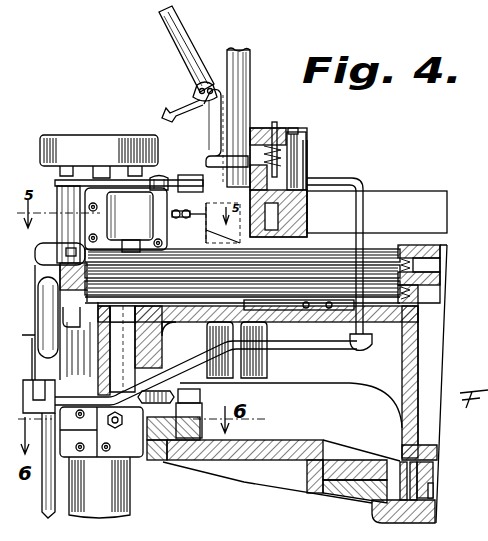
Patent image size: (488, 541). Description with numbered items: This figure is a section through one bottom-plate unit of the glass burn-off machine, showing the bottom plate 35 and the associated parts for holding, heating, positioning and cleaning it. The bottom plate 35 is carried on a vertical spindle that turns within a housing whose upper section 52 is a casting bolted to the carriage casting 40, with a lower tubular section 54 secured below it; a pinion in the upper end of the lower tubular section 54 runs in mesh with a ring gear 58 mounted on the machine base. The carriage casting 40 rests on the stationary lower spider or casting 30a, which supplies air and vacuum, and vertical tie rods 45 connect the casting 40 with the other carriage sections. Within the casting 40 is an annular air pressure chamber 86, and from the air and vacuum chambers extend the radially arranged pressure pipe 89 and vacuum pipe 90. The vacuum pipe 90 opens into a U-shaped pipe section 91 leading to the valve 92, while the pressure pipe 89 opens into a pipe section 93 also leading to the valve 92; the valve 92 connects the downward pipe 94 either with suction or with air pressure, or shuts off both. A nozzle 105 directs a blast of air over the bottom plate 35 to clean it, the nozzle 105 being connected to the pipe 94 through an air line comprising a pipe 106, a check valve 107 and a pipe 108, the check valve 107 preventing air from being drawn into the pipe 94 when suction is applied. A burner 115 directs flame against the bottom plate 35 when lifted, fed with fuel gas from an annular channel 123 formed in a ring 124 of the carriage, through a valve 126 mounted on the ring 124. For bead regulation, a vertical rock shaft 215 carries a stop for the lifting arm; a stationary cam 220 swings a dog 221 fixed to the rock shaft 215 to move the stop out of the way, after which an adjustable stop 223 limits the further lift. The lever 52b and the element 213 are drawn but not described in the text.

The burner 115 is at (181, 34).
The nozzle 105 is at (170, 112).
The pipe 106 is at (194, 112).
The vertical tie rods 45 is at (246, 62).
The bottom plate 35 is at (55, 140).
The adjustable stop 223 is at (160, 178).
The upper section of housing 52 is at (76, 238).
The lever 52b is at (274, 306).
The vertical rock shaft 215 is at (189, 214).
The check valve 107 is at (274, 132).
The valve 126 is at (304, 140).
The annular channel 123 is at (305, 172).
The ring 124 is at (429, 200).
The pipe 108 is at (341, 181).
The vacuum pipe 90 is at (373, 258).
The rod 213 is at (137, 268).
The pressure pipe 89 is at (383, 288).
The annular air pressure chamber 86 is at (438, 330).
The lower table or casting 40 is at (357, 383).
The lower spider or casting 30a is at (357, 493).
The U-shaped pipe section 91 is at (50, 256).
The pipe section 93 is at (45, 298).
The valve 92 is at (75, 340).
The stationary cam 220 is at (207, 410).
The dog 221 is at (172, 400).
The ring gear 58 is at (153, 454).
The lower tubular section 54 is at (125, 497).
The pipe 94 is at (47, 503).